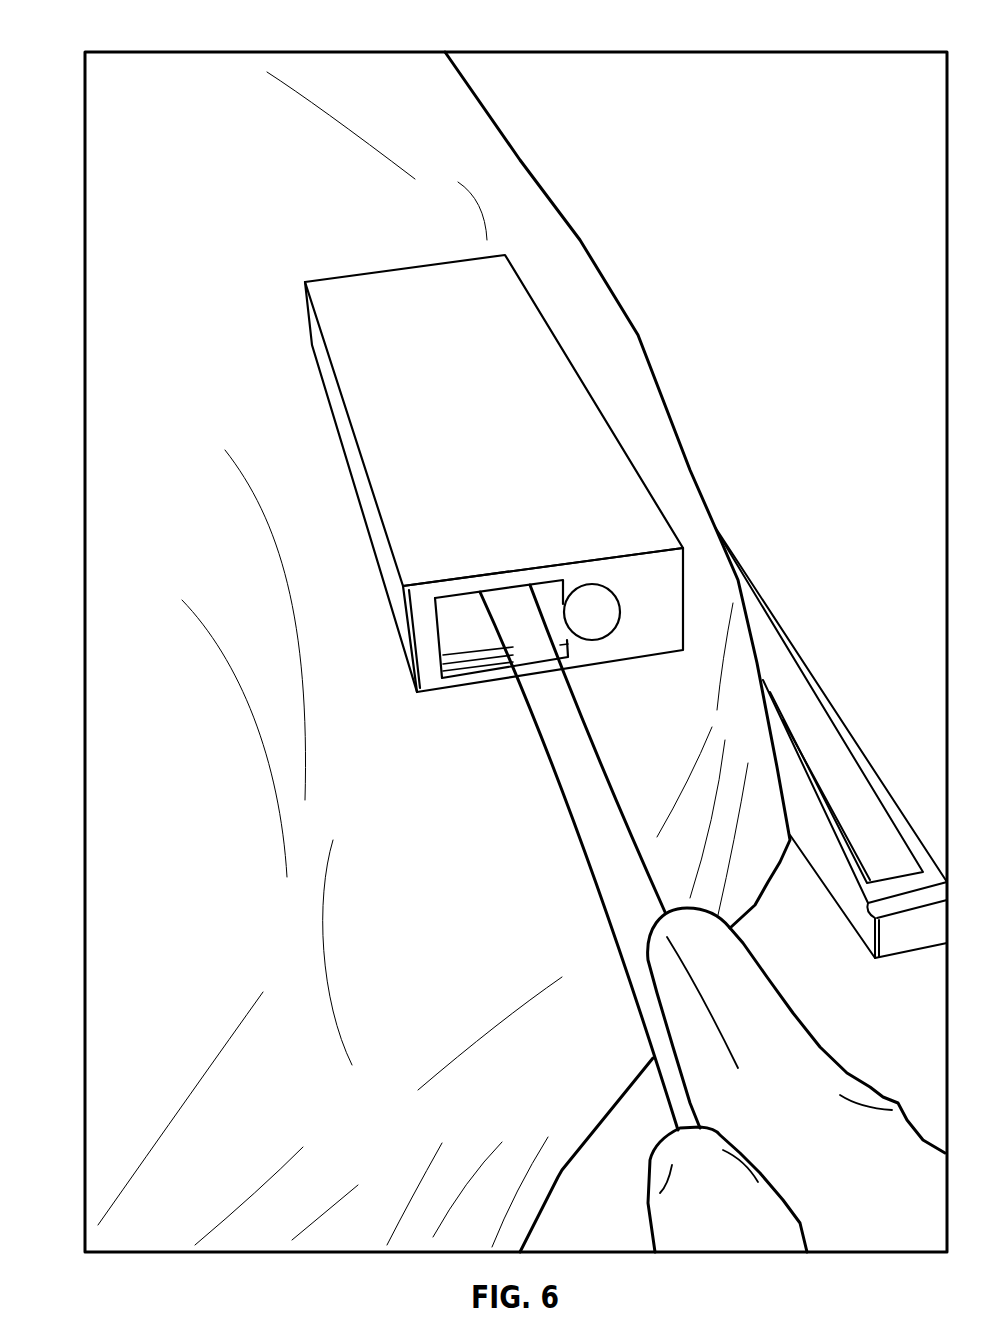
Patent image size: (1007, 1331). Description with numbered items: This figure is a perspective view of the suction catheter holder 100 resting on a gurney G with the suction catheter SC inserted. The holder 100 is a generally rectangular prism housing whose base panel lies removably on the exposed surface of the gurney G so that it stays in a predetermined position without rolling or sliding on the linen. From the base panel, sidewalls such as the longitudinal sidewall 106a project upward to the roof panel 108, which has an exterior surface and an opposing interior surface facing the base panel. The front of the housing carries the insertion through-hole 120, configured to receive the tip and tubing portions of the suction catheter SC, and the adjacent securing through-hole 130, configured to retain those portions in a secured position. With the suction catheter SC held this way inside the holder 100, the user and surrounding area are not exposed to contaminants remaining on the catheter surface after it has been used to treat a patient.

The suction catheter holder 100 is at (124, 34).
The roof panel 108 is at (380, 432).
The longitudinal sidewall 106a is at (358, 463).
The insertion through-hole 120 is at (470, 666).
The securing through-hole 130 is at (598, 626).
The gurney G is at (710, 547).
The suction catheter SC is at (595, 853).